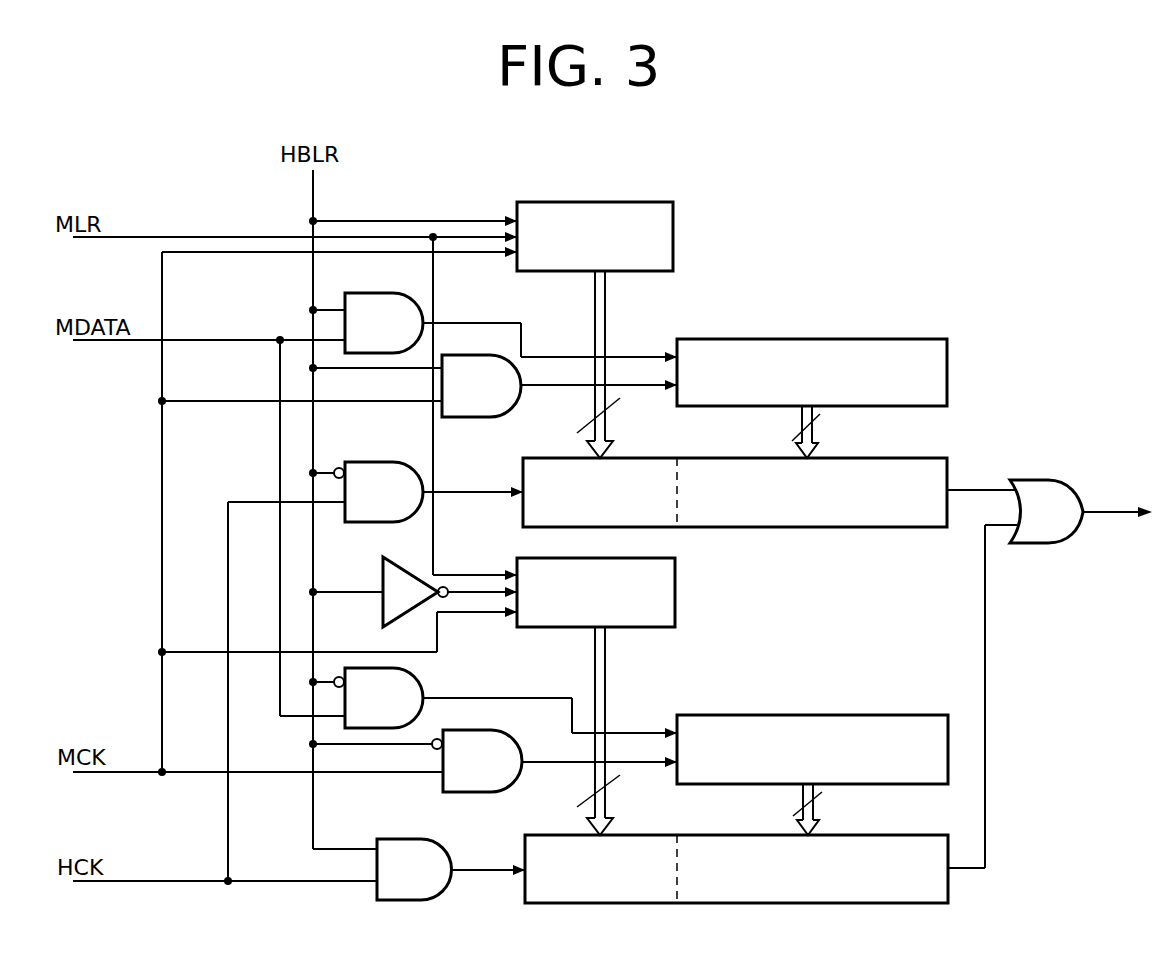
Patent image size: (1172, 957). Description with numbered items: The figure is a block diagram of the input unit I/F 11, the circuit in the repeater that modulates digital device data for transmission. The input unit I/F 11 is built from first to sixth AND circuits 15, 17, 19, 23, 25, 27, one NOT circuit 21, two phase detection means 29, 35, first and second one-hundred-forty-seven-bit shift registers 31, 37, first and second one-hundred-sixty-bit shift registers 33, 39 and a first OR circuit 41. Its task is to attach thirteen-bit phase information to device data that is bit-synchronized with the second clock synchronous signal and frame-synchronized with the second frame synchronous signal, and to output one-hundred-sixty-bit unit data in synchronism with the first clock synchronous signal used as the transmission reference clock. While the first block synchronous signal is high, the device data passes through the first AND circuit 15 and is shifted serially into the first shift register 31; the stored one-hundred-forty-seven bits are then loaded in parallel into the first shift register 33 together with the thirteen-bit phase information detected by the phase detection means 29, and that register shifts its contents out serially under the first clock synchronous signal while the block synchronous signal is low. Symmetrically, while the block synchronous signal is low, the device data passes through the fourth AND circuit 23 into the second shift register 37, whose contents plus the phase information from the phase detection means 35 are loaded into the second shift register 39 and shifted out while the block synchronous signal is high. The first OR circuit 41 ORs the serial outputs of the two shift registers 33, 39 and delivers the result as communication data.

The input unit I/F 11 is at (897, 215).
The first AND circuit 15 is at (378, 292).
The second AND circuit 17 is at (476, 420).
The third AND circuit 19 is at (378, 462).
The NOT circuit 21 is at (383, 578).
The fourth AND circuit 23 is at (423, 688).
The fifth AND circuit 25 is at (503, 733).
The sixth AND circuit 27 is at (452, 852).
The phase detection means 29 is at (595, 202).
The first 147 shift register 31 is at (915, 338).
The first 160 shift register 33 is at (933, 456).
The phase detection means 35 is at (675, 588).
The second 147 shift register 37 is at (917, 712).
The second 160 shift register 39 is at (905, 833).
The first OR circuit 41 is at (1060, 478).